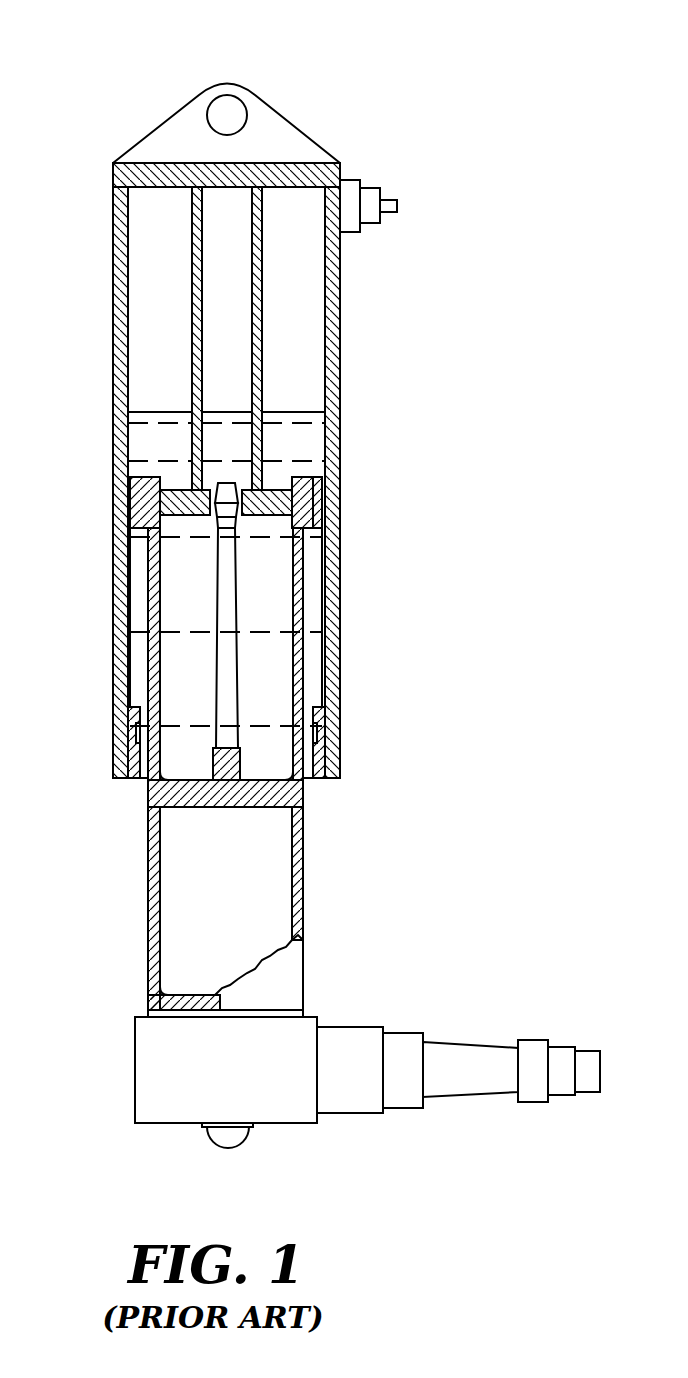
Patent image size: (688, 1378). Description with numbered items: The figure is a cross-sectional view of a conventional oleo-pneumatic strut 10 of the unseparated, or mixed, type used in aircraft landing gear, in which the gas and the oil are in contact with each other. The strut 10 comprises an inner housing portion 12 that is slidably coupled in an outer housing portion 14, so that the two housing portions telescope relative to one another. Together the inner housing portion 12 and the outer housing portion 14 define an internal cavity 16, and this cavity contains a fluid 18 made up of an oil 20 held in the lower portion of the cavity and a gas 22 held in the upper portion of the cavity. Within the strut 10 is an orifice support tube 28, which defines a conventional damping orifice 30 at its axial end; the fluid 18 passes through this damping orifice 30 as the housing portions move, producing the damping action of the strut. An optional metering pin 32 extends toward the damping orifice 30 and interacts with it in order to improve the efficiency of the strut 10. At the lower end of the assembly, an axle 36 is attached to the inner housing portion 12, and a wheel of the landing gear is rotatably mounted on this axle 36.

The strut 10 is at (108, 58).
The inner housing portion 12 is at (303, 853).
The outer housing portion 14 is at (113, 384).
The internal cavity 16 is at (263, 580).
The fluid 18 is at (302, 411).
The oil 20 is at (273, 678).
The gas 22 is at (297, 270).
The orifice support tube 28 is at (187, 268).
The damping orifice 30 is at (240, 514).
The metering pin 32 is at (223, 595).
The axle 36 is at (480, 1045).